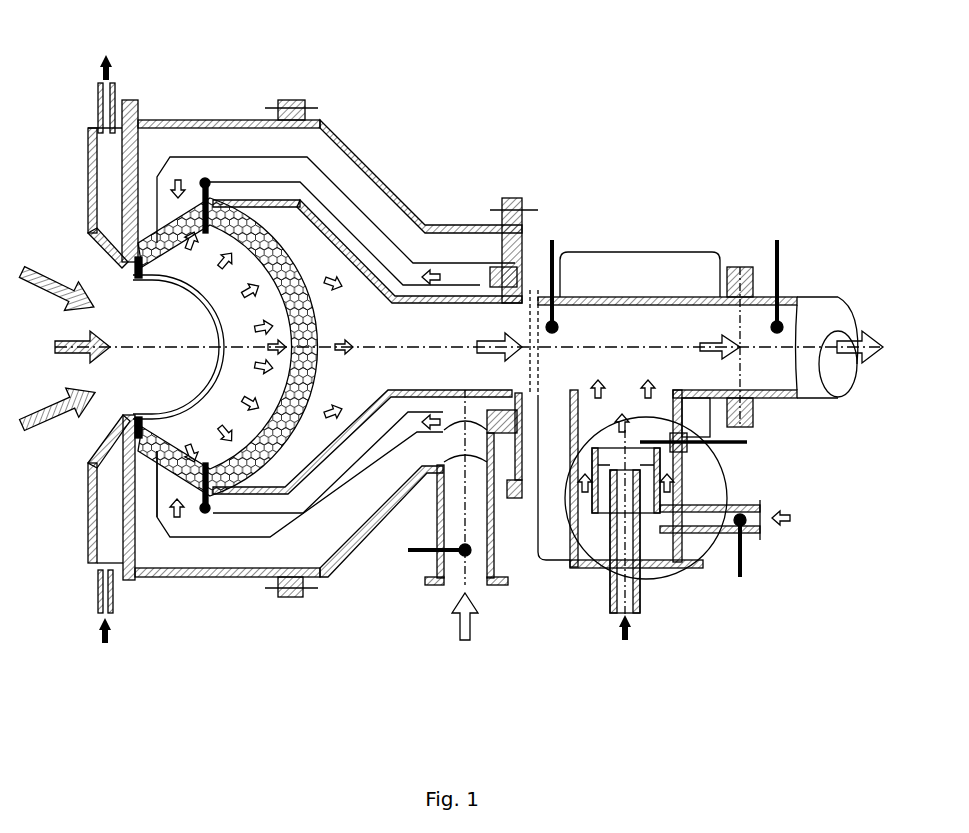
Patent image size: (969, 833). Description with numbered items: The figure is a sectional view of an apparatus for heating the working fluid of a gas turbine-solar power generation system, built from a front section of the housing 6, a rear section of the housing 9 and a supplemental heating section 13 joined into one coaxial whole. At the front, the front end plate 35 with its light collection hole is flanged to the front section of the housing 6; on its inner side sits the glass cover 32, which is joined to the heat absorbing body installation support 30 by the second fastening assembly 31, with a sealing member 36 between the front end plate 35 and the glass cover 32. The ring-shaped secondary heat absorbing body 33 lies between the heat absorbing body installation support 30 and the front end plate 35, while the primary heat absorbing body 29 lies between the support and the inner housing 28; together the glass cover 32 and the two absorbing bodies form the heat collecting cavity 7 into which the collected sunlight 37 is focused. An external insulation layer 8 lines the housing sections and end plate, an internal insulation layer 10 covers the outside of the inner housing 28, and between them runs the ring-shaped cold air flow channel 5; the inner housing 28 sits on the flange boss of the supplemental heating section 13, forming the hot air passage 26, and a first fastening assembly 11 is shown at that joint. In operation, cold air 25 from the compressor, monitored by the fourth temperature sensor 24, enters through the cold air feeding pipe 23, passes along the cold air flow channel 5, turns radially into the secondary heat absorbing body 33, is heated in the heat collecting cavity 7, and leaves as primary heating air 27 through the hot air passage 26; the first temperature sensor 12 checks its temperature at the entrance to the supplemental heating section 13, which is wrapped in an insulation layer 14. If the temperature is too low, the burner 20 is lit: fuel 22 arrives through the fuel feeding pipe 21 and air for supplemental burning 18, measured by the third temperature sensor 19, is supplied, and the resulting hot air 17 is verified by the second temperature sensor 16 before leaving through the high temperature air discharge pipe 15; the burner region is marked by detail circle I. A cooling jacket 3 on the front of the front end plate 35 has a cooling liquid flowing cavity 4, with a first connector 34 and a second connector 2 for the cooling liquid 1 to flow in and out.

The cooling liquid 1 is at (105, 62).
The second connector 2 is at (126, 104).
The cooling jacket 3 is at (140, 120).
The cooling liquid flowing cavity 4 is at (195, 172).
The cold air flow channel 5 is at (228, 205).
The front section of the housing 6 is at (225, 295).
The heat collecting cavity 7 is at (285, 225).
The external insulation layer 8 is at (350, 250).
The rear section of the housing 9 is at (405, 245).
The internal insulation layer 10 is at (418, 212).
The first fastening assembly 11 is at (503, 197).
The first temperature sensor 12 is at (552, 238).
The supplemental heating section 13 is at (652, 255).
The insulation layer 14 is at (712, 295).
The high temperature air discharge pipe 15 is at (740, 267).
The second temperature sensor 16 is at (777, 240).
The hot air 17 is at (855, 290).
The air for supplemental burning 18 is at (763, 525).
The third temperature sensor 19 is at (742, 578).
The burner 20 is at (700, 565).
The fuel feeding pipe 21 is at (663, 560).
The fuel 22 is at (628, 636).
The cold air feeding pipe 23 is at (470, 556).
The fourth temperature sensor 24 is at (490, 545).
The cold air 25 is at (455, 590).
The hot air passage 26 is at (378, 400).
The primary heating air 27 is at (395, 418).
The inner housing 28 is at (322, 570).
The primary heat absorbing body 29 is at (262, 482).
The heat absorbing body installation support 30 is at (210, 515).
The second fastening assembly 31 is at (208, 522).
The glass cover 32 is at (185, 565).
The secondary heat absorbing body 33 is at (168, 578).
The first connector 34 is at (97, 592).
The front end plate 35 is at (88, 538).
The sealing member 36 is at (125, 425).
The collected sunlight 37 is at (88, 408).
The detail circle I is at (727, 480).